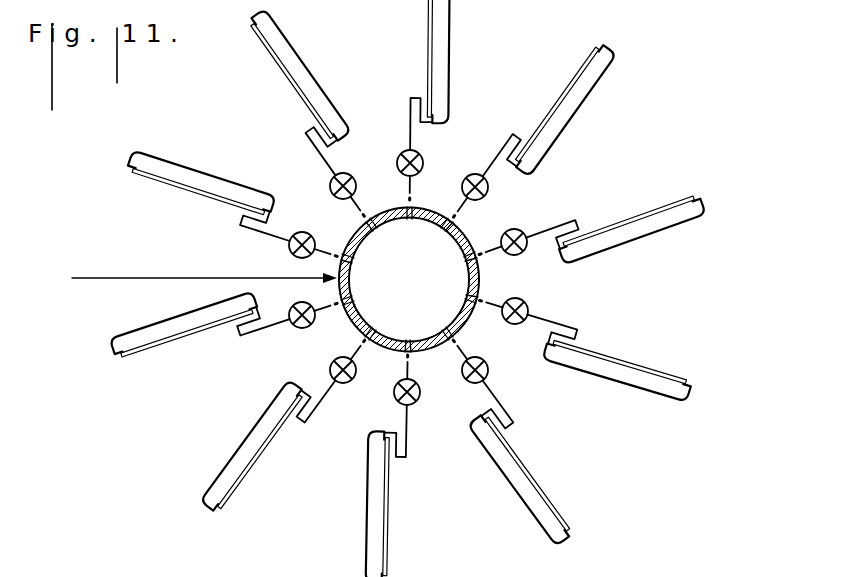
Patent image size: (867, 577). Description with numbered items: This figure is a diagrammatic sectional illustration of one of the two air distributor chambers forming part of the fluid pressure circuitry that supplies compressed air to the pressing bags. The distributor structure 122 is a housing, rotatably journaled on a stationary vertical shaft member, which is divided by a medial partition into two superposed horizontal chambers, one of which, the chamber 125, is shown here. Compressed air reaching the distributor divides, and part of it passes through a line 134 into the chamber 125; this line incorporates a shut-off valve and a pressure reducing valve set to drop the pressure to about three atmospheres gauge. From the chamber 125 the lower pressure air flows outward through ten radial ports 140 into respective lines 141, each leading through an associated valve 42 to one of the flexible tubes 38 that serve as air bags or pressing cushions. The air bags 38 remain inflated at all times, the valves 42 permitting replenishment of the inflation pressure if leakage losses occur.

The flexible tube 38 is at (442, 58).
The valve 42 is at (352, 173).
The distributor structure 122 is at (481, 224).
The chamber 125 is at (436, 308).
The line 134 is at (183, 277).
The radial ports 140 is at (443, 233).
The lines 141 is at (330, 246).